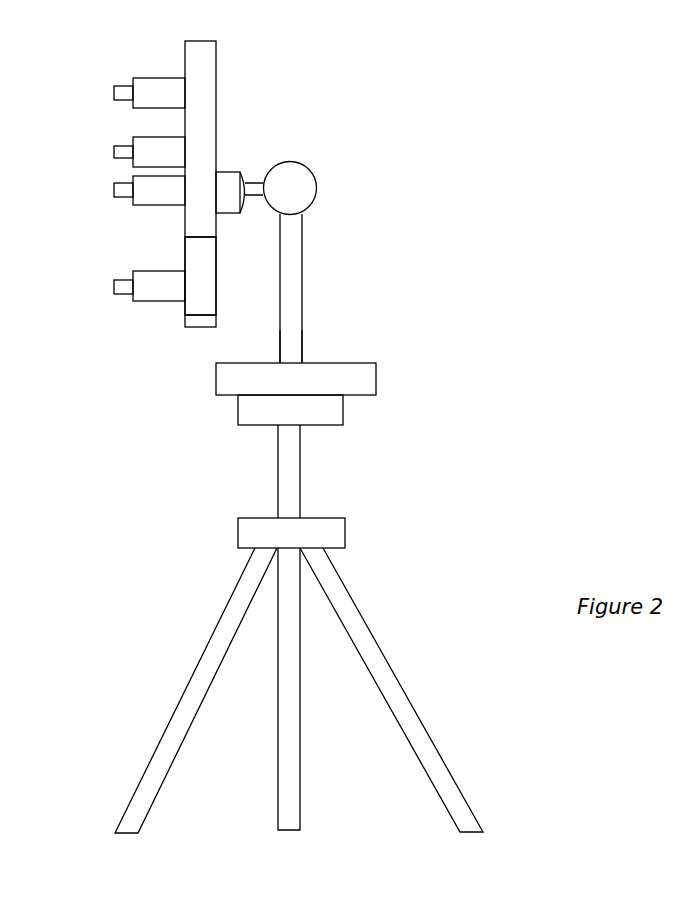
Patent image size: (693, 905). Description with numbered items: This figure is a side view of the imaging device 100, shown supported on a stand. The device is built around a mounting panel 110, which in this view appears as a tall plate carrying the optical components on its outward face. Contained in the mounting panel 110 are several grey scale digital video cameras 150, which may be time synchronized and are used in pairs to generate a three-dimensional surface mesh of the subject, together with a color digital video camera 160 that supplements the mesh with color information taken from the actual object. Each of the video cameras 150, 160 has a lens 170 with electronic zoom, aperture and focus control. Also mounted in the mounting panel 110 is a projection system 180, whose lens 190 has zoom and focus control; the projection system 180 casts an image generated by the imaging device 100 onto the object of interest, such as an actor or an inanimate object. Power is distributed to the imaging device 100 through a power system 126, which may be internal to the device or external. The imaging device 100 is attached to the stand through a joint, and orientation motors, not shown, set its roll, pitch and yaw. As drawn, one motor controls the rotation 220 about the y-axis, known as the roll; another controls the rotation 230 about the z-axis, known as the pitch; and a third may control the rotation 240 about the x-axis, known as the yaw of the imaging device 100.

The imaging device 100 is at (373, 92).
The mounting panel 110 is at (203, 184).
The power system 126 is at (203, 276).
The grey scale digital video cameras 150 is at (151, 79).
The color digital video camera 160 is at (141, 131).
The lenses 170 is at (100, 90).
The projection system 180 is at (148, 206).
The lens 190 is at (120, 187).
The rotation about the y-axis 220 is at (262, 343).
The rotation about the z-axis 230 is at (265, 159).
The rotation about the x-axis 240 is at (236, 166).